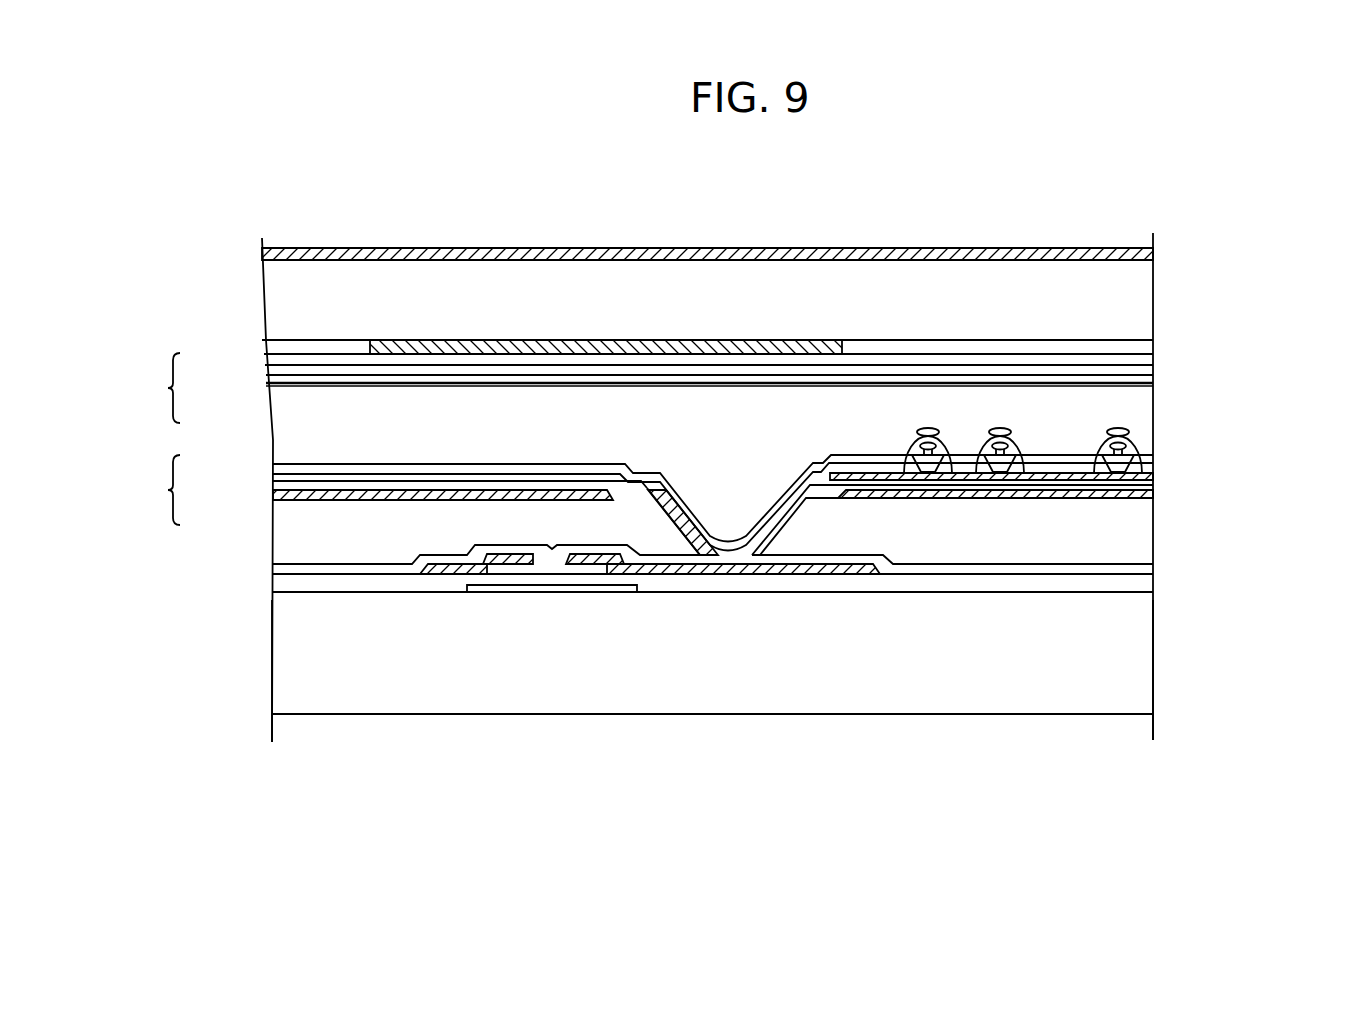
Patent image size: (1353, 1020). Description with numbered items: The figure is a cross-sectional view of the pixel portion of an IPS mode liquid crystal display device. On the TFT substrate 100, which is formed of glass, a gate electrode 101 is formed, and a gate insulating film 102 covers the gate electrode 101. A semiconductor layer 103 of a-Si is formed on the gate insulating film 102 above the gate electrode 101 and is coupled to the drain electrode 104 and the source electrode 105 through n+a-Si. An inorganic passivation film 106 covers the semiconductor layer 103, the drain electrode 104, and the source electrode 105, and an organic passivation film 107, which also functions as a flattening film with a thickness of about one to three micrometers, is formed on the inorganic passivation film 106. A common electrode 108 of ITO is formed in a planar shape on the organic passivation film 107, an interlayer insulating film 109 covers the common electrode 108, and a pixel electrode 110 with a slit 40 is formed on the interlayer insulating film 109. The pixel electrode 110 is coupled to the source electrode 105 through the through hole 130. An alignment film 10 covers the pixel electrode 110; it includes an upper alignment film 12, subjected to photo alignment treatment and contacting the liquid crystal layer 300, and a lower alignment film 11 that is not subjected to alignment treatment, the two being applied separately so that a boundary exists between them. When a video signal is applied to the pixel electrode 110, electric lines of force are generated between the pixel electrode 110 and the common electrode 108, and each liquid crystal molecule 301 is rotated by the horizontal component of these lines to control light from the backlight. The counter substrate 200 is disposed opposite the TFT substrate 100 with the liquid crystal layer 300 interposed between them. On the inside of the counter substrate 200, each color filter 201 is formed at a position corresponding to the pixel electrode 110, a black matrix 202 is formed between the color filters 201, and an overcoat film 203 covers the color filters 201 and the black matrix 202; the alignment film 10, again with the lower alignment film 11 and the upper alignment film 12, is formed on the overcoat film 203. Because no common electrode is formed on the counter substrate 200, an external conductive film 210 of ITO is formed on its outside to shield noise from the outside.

The alignment film 10 is at (155, 439).
The lower alignment film 11 is at (280, 372).
The upper alignment film 12 is at (295, 383).
The slit 40 is at (962, 470).
The TFT substrate 100 is at (1140, 656).
The gate electrode 101 is at (565, 594).
The gate insulating film 102 is at (1148, 582).
The semiconductor layer 103 is at (510, 576).
The drain electrode 104 is at (445, 576).
The source electrode 105 is at (668, 576).
The inorganic passivation film 106 is at (1148, 568).
The organic passivation film 107 is at (1148, 536).
The common electrode 108 is at (1150, 496).
The interlayer insulating film 109 is at (1150, 484).
The pixel electrode 110 is at (1053, 480).
The through hole 130 is at (729, 484).
The counter substrate 200 is at (1143, 284).
The color filter 201 is at (877, 343).
The black matrix 202 is at (714, 343).
The overcoat film 203 is at (1143, 358).
The external conductive film 210 is at (972, 256).
The liquid crystal layer 300 is at (1143, 401).
The liquid crystal molecule 301 is at (1140, 436).